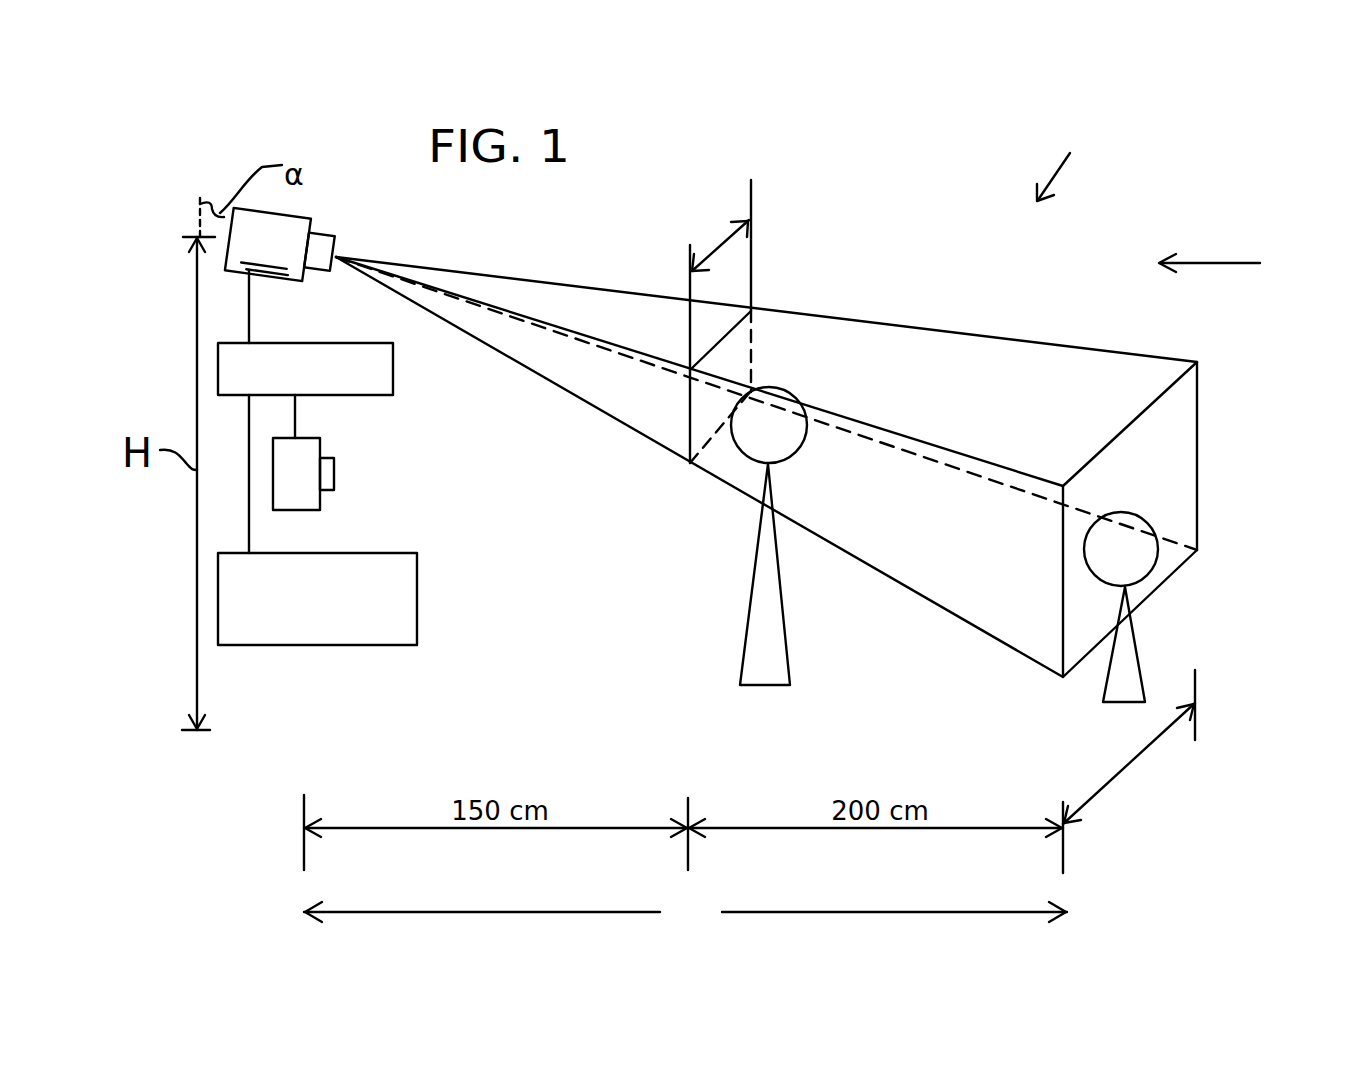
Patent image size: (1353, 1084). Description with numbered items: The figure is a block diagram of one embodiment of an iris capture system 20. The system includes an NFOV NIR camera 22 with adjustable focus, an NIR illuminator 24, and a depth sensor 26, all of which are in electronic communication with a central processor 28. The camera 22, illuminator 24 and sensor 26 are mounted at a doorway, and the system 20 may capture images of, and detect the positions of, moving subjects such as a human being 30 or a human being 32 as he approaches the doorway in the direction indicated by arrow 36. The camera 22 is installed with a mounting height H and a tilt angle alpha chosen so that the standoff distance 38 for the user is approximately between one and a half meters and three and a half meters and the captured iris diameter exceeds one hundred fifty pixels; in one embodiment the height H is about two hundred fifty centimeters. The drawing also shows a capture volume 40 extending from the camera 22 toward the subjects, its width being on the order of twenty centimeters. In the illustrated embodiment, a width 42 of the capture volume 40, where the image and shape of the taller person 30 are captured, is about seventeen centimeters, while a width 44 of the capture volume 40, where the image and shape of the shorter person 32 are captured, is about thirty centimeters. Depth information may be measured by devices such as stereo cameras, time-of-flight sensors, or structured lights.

The iris capture system 20 is at (1070, 157).
The NFOV NIR camera 22 is at (281, 246).
The NIR illuminator 24 is at (417, 580).
The depth sensor 26 is at (314, 494).
The central processor 28 is at (355, 397).
The human being 30 is at (770, 672).
The human being 32 is at (1117, 688).
The arrow 36 is at (1199, 262).
The standoff distance 38 is at (685, 912).
The capture volume 40 is at (915, 327).
The width of capture volume 42 is at (703, 262).
The width of capture volume 44 is at (1123, 766).